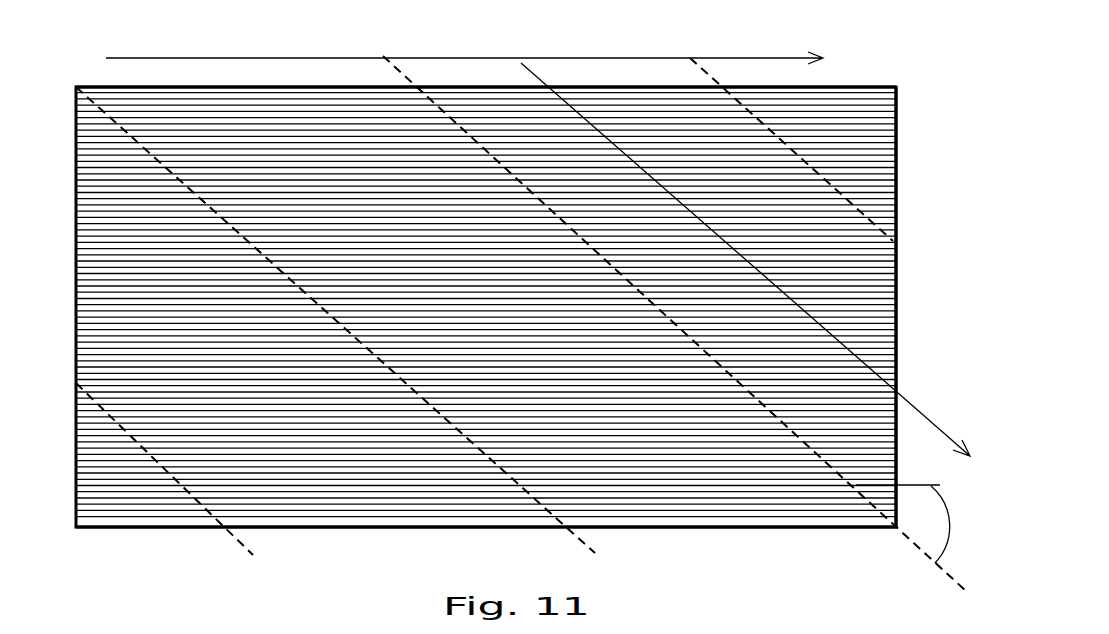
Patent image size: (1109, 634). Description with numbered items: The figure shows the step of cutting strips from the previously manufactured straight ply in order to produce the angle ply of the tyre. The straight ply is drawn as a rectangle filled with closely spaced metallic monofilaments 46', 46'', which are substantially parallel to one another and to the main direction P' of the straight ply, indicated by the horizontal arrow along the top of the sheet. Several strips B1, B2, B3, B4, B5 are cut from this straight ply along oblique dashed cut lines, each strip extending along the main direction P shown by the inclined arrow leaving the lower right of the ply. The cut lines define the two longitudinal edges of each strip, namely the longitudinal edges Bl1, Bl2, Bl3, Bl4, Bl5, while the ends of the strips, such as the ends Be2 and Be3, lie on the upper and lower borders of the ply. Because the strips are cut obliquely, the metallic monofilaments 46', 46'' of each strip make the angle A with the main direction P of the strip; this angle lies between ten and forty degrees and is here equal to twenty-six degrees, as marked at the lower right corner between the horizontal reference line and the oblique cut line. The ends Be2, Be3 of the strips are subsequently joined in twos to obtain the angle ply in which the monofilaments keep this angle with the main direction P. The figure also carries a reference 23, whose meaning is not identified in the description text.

The ply / strip of material 23 is at (807, 498).
The metallic monofilament 46' is at (486, 74).
The metallic monofilament 46'' is at (486, 68).
The end of strip Be2 is at (345, 522).
The end of strip Be3 is at (260, 78).
The longitudinal edge of strip Bl1 is at (107, 412).
The longitudinal edge of strip Bl2 is at (240, 235).
The longitudinal edge of strip Bl3 is at (268, 257).
The longitudinal edge of strip Bl4 is at (612, 270).
The longitudinal edge of strip Bl5 is at (878, 230).
The strip B1 is at (114, 496).
The strip B2 is at (314, 460).
The strip B3 is at (481, 284).
The strip B4 is at (729, 182).
The strip B5 is at (852, 116).
The main direction of strip P is at (758, 266).
The main direction of straight ply P' is at (482, 56).
The angle A is at (909, 524).